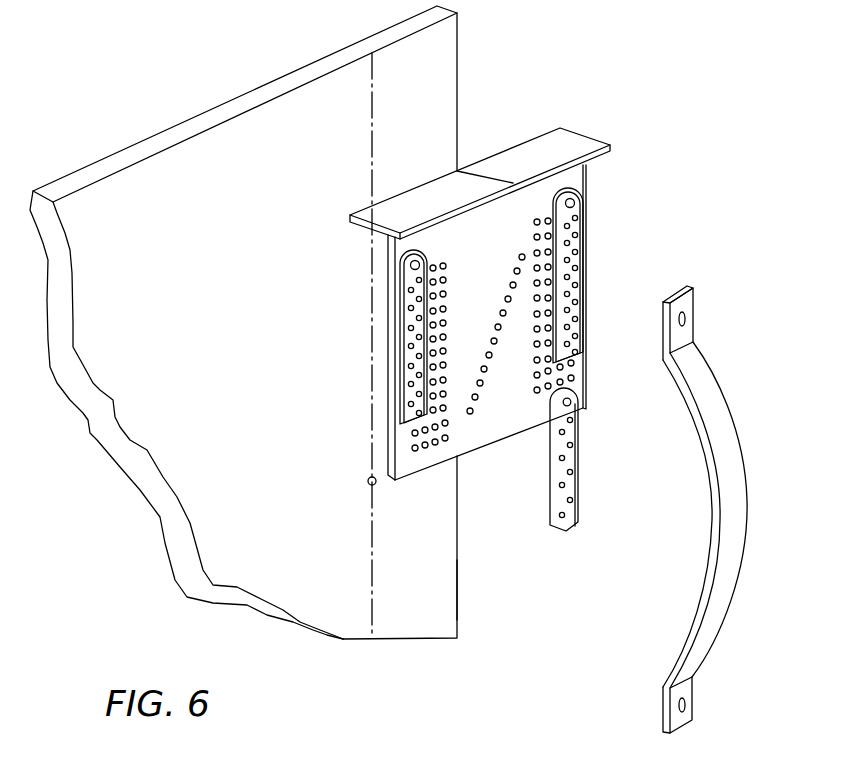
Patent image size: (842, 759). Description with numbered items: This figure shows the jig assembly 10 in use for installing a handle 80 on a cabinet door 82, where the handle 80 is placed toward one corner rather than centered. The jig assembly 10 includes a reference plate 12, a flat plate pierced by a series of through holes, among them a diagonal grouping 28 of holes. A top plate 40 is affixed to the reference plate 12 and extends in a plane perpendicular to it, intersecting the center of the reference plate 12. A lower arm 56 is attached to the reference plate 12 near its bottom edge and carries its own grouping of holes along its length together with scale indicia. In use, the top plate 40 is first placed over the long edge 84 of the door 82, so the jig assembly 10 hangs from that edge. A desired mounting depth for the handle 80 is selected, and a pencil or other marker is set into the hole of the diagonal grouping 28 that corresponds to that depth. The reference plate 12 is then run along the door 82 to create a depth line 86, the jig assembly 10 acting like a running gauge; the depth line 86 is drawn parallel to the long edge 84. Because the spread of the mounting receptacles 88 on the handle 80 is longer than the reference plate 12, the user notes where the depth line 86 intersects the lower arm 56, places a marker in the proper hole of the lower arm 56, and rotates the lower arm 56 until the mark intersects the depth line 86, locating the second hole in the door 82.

The jig assembly 10 is at (492, 296).
The reference plate 12 is at (487, 339).
The diagonal grouping 28 is at (518, 342).
The top plate 40 is at (522, 155).
The lower arm 56 is at (580, 456).
The handle 80 is at (721, 509).
The door 82 is at (430, 77).
The long edge 84 is at (457, 538).
The depth line 86 is at (372, 172).
The mounting receptacles 88 is at (687, 317).